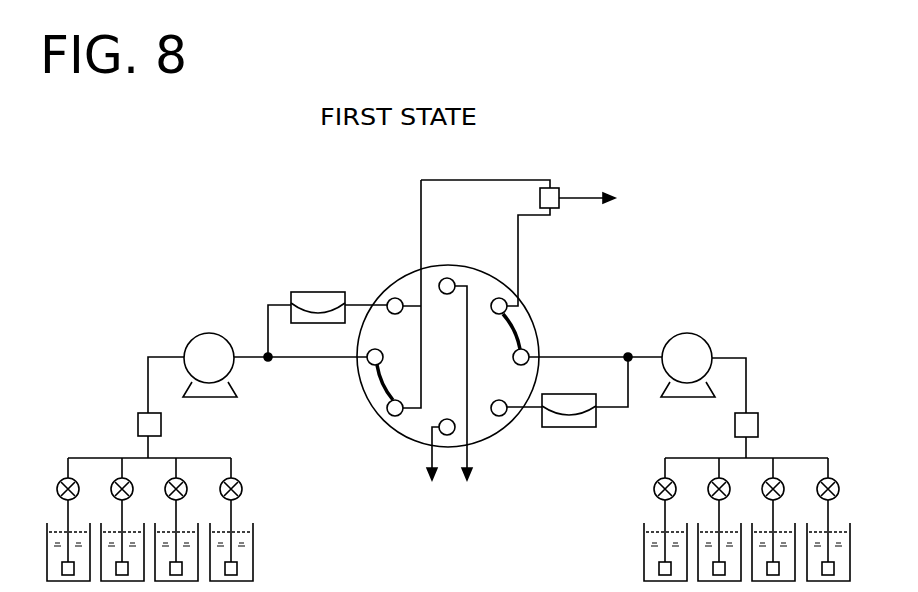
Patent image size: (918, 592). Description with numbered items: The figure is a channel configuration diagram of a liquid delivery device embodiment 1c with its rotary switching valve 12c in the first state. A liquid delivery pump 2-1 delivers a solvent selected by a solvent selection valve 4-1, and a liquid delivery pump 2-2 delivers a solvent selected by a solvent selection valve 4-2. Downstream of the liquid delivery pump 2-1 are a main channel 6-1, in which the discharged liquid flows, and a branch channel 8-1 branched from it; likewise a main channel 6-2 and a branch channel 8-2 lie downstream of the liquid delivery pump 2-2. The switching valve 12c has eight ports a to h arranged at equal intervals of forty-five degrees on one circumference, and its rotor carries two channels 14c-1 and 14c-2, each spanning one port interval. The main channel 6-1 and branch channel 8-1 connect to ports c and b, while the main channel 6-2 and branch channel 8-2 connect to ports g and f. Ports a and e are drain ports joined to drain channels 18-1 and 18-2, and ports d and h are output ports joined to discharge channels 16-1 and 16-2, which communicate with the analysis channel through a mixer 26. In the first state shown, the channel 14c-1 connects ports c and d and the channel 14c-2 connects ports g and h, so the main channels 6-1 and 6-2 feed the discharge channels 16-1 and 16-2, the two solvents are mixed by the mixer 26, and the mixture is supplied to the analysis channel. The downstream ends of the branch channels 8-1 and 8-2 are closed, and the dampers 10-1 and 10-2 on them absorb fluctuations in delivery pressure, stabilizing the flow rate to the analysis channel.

The liquid delivery device embodiment 1c is at (151, 252).
The liquid delivery pump 2-1 is at (218, 333).
The liquid delivery pump 2-2 is at (693, 331).
The solvent selection valve 4-1 is at (242, 498).
The solvent selection valve 4-2 is at (655, 489).
The main channel 6-1 is at (313, 359).
The main channel 6-2 is at (585, 353).
The branch channel 8-1 is at (280, 303).
The branch channel 8-2 is at (632, 405).
The damper 10-1 is at (322, 292).
The damper 10-2 is at (570, 428).
The rotary switching valve 12c is at (462, 263).
The rotor channel 14c-1 is at (379, 382).
The rotor channel 14c-2 is at (528, 322).
The discharge channel 16-1 is at (420, 232).
The discharge channel 16-2 is at (522, 258).
The drain channel 18-1 is at (470, 455).
The drain channel 18-2 is at (428, 457).
The mixer 26 is at (560, 187).